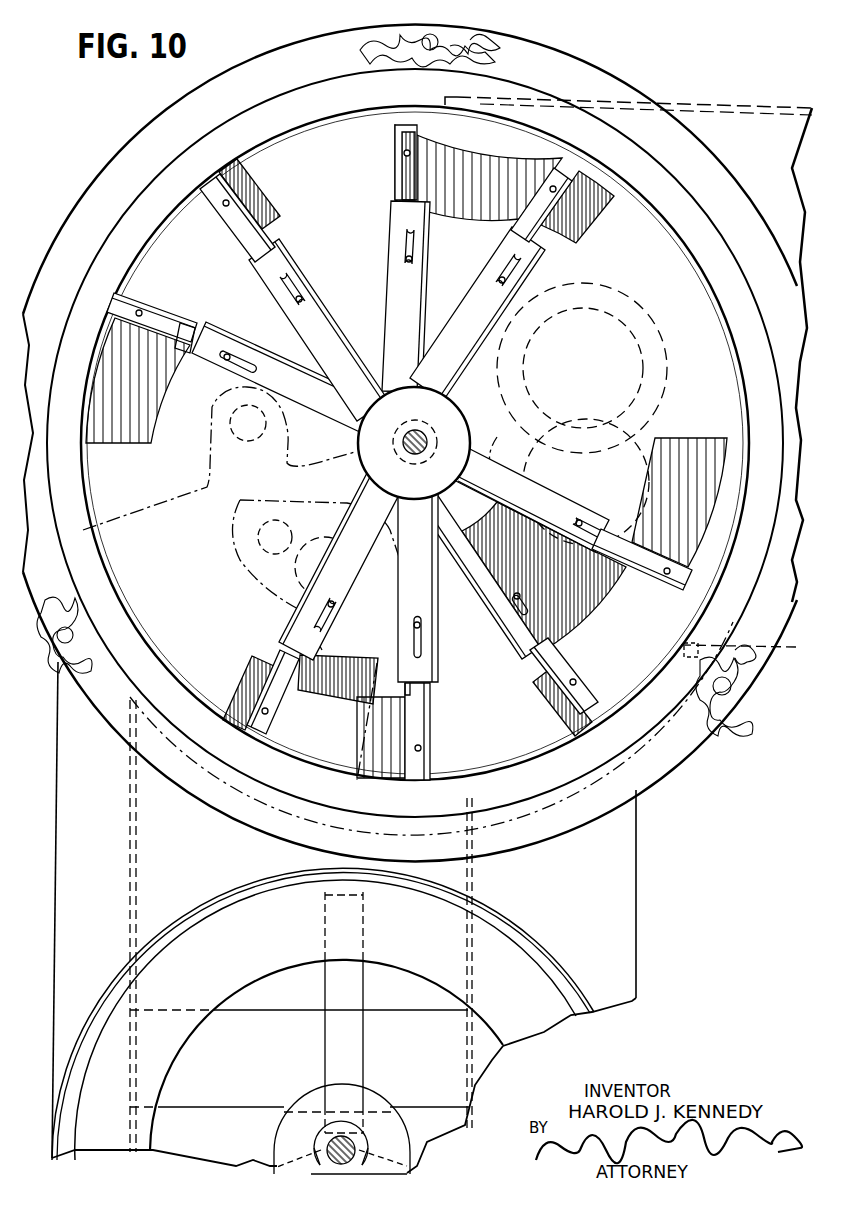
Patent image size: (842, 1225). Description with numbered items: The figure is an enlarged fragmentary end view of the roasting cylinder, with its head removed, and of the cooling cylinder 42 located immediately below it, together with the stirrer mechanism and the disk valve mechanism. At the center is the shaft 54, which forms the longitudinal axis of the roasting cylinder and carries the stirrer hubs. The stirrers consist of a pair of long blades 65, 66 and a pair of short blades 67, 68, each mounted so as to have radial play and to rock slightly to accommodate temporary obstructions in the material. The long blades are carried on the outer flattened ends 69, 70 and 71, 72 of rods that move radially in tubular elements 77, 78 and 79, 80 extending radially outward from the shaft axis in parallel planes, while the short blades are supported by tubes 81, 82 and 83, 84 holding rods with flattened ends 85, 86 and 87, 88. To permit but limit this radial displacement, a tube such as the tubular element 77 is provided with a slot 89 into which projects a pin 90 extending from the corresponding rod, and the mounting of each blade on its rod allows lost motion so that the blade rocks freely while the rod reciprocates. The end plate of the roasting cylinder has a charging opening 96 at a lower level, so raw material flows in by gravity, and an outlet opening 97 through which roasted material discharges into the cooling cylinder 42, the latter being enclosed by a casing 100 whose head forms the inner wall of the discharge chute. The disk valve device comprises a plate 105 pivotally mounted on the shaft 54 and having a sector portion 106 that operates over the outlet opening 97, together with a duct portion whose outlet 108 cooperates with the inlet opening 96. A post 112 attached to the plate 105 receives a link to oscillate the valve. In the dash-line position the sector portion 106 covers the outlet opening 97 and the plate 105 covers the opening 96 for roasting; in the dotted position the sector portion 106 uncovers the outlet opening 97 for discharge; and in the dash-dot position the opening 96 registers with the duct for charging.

The cooling cylinder 42 is at (178, 940).
The shaft 54 is at (412, 446).
The long blade 65 is at (709, 447).
The long blade 66 is at (152, 386).
The short blade 67 is at (603, 203).
The short blade 68 is at (235, 678).
The flattened end 69 is at (125, 318).
The flattened end 70 is at (219, 198).
The flattened end 71 is at (553, 705).
The flattened end 72 is at (682, 563).
The tubular element 77 is at (473, 552).
The tubular element 78 is at (586, 556).
The tubular element 79 is at (263, 397).
The tubular element 80 is at (303, 322).
The tube 81 is at (416, 284).
The tube 82 is at (500, 250).
The tube 83 is at (368, 568).
The tube 84 is at (433, 606).
The flattened end 85 is at (403, 150).
The flattened end 86 is at (548, 192).
The flattened end 87 is at (274, 728).
The flattened end 88 is at (432, 722).
The slot 89 is at (250, 352).
The pin 90 is at (229, 354).
The opening 96 is at (500, 492).
The outlet opening 97 is at (352, 676).
The casing 100 is at (100, 993).
The plate 105 is at (260, 603).
The sector portion 106 is at (618, 745).
The outlet 108 is at (639, 363).
The post 112 is at (262, 548).